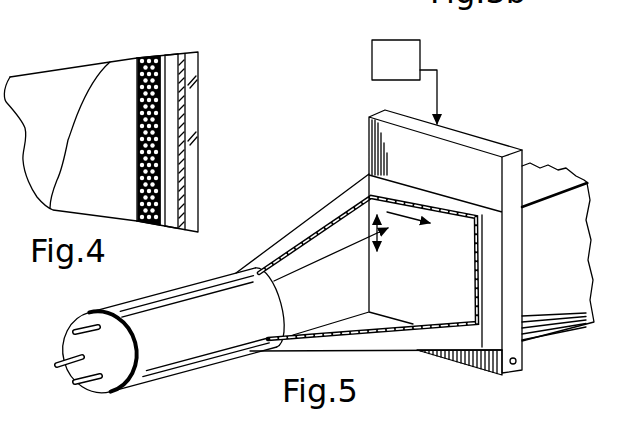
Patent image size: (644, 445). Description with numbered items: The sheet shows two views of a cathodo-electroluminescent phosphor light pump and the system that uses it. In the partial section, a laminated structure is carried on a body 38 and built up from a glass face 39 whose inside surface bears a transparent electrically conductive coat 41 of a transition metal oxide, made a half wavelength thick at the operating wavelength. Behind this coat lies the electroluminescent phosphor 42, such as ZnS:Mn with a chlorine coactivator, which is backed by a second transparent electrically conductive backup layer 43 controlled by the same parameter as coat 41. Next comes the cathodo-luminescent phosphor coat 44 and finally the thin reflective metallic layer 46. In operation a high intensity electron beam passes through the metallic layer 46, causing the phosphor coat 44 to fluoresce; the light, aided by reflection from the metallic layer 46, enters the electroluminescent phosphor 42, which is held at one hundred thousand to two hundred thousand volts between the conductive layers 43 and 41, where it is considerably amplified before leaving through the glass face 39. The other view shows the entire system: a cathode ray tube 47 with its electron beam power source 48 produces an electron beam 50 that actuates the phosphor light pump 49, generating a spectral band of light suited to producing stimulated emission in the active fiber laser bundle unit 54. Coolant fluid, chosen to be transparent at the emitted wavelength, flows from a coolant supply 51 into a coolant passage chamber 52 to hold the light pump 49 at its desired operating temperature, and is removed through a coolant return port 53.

In FIG. 4, the substrate sheet 38 is at (62, 70).
In FIG. 4, the glass face 39 is at (196, 55).
In FIG. 4, the transparent electrically conductive coat 41 is at (181, 56).
In FIG. 4, the electroluminescent phosphor 42 is at (172, 57).
In FIG. 4, the backup layer 43 is at (162, 57).
In FIG. 4, the cathodo-luminescent phosphor coat 44 is at (148, 60).
In FIG. 4, the reflective metallic layer 46 is at (139, 61).
In FIG. 5, the cathode ray tube 47 is at (330, 208).
In FIG. 5, the electron beam power source 48 is at (185, 336).
In FIG. 5, the phosphor light pump 49 is at (428, 273).
In FIG. 5, the electron beam 50 is at (298, 275).
In FIG. 5, the coolant supply 51 is at (404, 82).
In FIG. 5, the coolant passage chamber 52 is at (478, 147).
In FIG. 5, the coolant return port 53 is at (517, 362).
In FIG. 5, the active fiber laser bundle unit 54 is at (567, 256).